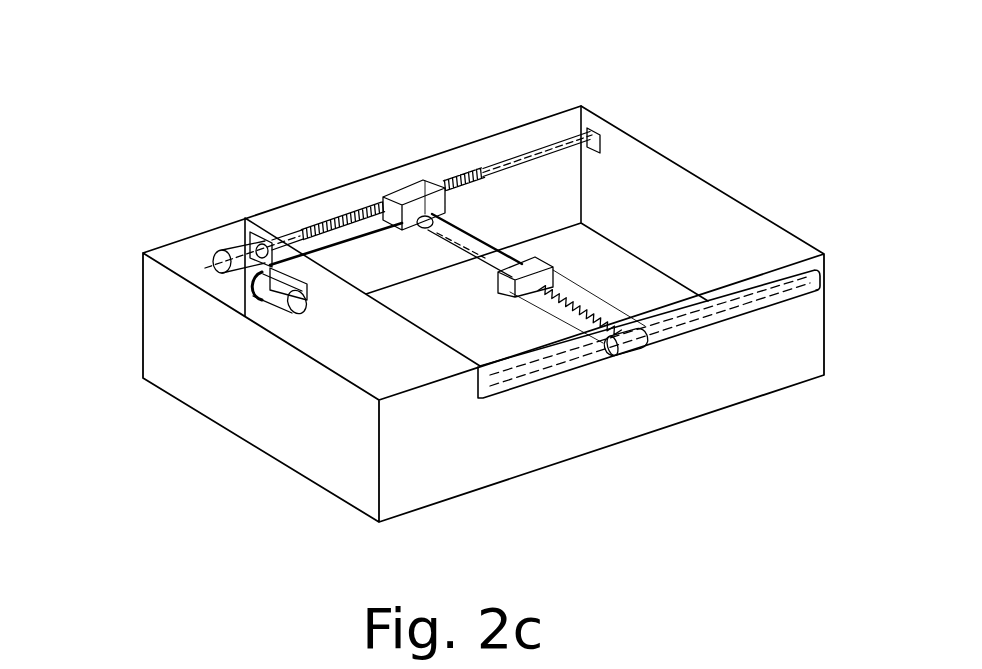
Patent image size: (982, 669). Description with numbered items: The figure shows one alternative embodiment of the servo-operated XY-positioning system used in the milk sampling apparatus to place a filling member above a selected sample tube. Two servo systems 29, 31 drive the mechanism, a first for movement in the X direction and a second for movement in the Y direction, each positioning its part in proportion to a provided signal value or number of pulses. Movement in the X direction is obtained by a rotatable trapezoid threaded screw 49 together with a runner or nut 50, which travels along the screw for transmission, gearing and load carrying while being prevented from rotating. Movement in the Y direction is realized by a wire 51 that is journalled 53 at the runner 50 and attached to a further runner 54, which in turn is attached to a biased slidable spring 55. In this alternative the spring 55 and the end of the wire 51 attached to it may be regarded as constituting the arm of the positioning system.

The servo system 29 is at (232, 250).
The servo system 31 is at (275, 300).
The rotatable trapezoid threaded screw 49 is at (345, 218).
The runner or nut 50 is at (393, 190).
The wire 51 is at (478, 219).
The journal 53 is at (432, 183).
The further runner 54 is at (500, 262).
The biased slidable spring 55 is at (570, 292).